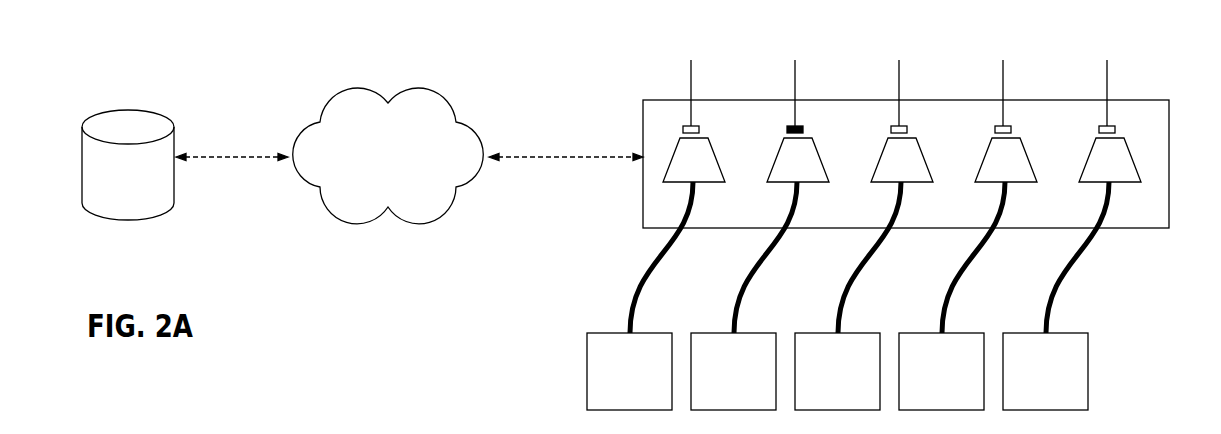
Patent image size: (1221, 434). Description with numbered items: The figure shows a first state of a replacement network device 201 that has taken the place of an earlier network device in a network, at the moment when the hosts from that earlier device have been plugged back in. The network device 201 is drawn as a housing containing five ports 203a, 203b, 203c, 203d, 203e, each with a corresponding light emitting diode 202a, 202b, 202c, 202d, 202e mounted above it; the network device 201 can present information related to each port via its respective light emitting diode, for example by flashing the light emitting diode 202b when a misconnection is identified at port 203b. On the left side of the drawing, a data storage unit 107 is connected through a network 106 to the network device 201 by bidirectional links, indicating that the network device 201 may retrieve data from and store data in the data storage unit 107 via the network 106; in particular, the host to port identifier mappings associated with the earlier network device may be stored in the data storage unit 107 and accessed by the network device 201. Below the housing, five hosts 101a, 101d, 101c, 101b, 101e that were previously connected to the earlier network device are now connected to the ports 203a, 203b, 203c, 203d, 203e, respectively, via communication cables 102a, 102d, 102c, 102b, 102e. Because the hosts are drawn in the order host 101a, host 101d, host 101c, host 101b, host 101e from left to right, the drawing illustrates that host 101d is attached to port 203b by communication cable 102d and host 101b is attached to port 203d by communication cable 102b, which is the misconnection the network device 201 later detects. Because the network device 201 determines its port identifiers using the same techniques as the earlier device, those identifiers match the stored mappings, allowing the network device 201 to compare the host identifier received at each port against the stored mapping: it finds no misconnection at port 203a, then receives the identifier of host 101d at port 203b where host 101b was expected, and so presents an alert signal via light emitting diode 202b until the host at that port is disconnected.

The data storage unit 107 is at (128, 165).
The network 106 is at (388, 156).
The network device 201 is at (1169, 196).
The light emitting diode 202a is at (686, 85).
The port 203a is at (677, 147).
The host 101a is at (629, 371).
The communication cable 102a is at (643, 267).
The light emitting diode 202b is at (790, 85).
The port 203b is at (781, 147).
The host 101b is at (941, 371).
The communication cable 102b is at (955, 267).
The light emitting diode 202c is at (893, 85).
The port 203c is at (885, 147).
The host 101c is at (837, 371).
The communication cable 102c is at (851, 267).
The light emitting diode 202d is at (998, 85).
The port 203d is at (989, 147).
The host 101d is at (733, 371).
The communication cable 102d is at (747, 267).
The light emitting diode 202e is at (1102, 85).
The port 203e is at (1093, 147).
The host 101e is at (1045, 371).
The communication cable 102e is at (1059, 267).